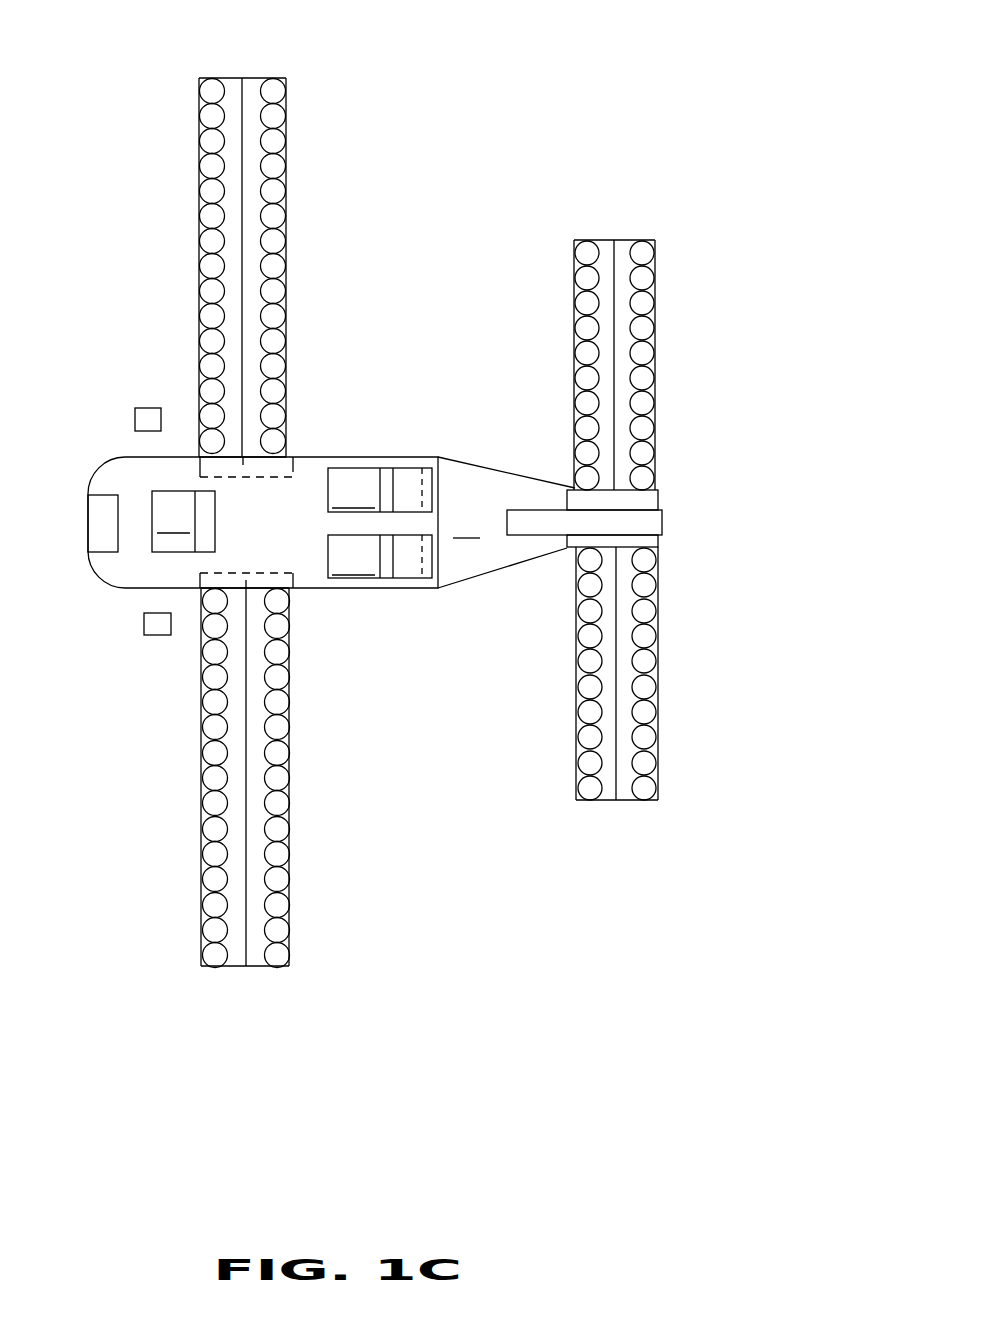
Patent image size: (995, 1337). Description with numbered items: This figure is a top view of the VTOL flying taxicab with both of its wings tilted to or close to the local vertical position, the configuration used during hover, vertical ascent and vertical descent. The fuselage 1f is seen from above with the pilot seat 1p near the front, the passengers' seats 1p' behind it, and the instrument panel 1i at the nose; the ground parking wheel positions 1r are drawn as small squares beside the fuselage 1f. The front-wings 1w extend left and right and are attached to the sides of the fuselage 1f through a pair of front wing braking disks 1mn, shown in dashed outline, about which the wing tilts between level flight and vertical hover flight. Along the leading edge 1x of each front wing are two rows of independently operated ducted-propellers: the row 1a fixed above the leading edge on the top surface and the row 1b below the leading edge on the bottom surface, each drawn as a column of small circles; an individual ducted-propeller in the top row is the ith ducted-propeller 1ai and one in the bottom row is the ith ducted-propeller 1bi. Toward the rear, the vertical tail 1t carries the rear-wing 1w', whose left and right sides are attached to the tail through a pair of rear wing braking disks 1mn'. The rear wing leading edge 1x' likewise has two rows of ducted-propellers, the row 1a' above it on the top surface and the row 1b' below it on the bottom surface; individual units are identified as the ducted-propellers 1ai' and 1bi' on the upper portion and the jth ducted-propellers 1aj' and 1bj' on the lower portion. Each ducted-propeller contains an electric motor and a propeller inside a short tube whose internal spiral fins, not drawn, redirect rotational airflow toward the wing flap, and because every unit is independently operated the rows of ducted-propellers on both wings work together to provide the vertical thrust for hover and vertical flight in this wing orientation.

The front-wings left and right 1w is at (223, 486).
The front wing-bottom surface ducted propellers 1b is at (165, 512).
The front wing-top surface ducted propellers 1a is at (323, 522).
The ith ducted propeller of 1a 1ai is at (328, 523).
The ith ducted propeller of 1b 1bi is at (147, 523).
The leading edge of 1w 1x is at (309, 522).
The ground parking wheel positions 1r is at (143, 408).
The fuselage 1f is at (312, 457).
The front wings braking disks 1mn is at (257, 522).
The pilot seat 1p is at (183, 521).
The passenger's seats 1p' is at (383, 570).
The instrument panel 1i is at (93, 515).
The vertical tail 1t is at (557, 518).
The rear-wing left and right 1w' is at (595, 539).
The ducted-propellers below rear-wing leading edge 1b' is at (541, 537).
The two rows ducted-propellers above leading edge rear-wing and top surface of 1w' 1a' is at (693, 527).
The rear wing leading edge 1x' is at (612, 520).
The ducted propeller of rear-wing bottom row 1bi' is at (522, 365).
The ducted propellers of rear-wing 1ai' is at (706, 365).
The rear wings braking disks 1mn' is at (668, 521).
The jth ducted-propeller of rear-wing top row 1aj' is at (688, 674).
The jth ducted-propeller of ducted row propellers 1b' 1bj' is at (541, 674).